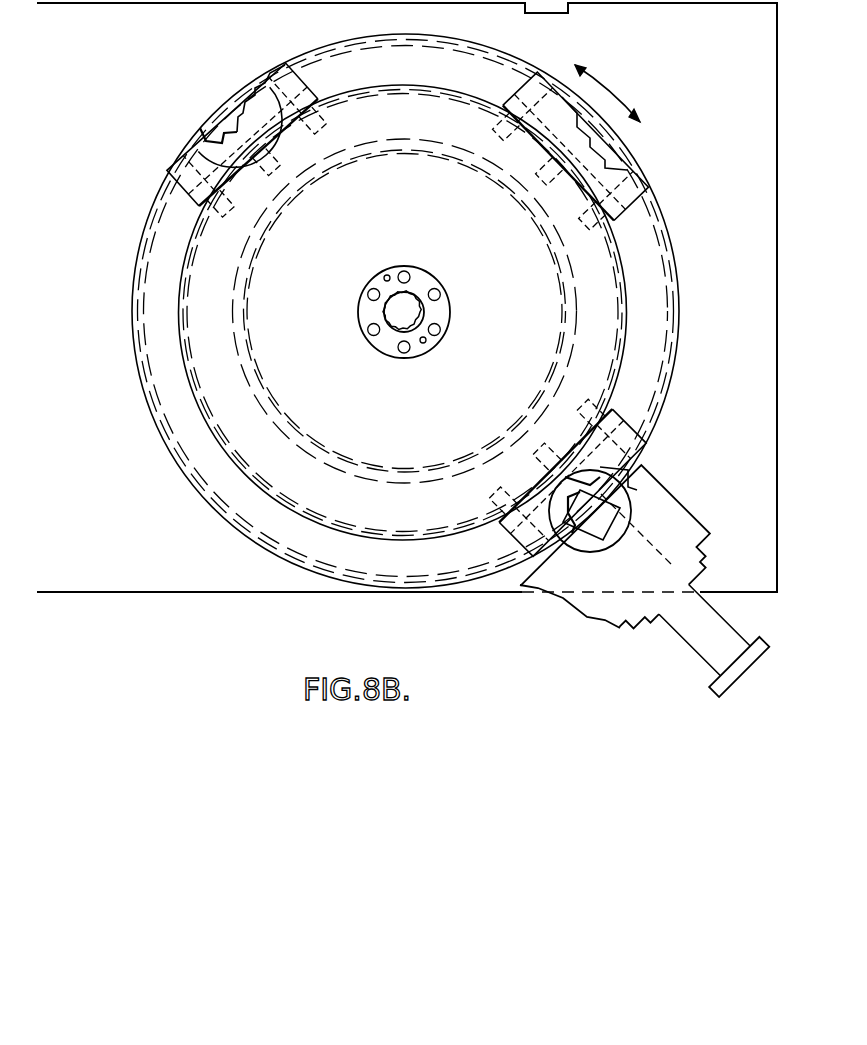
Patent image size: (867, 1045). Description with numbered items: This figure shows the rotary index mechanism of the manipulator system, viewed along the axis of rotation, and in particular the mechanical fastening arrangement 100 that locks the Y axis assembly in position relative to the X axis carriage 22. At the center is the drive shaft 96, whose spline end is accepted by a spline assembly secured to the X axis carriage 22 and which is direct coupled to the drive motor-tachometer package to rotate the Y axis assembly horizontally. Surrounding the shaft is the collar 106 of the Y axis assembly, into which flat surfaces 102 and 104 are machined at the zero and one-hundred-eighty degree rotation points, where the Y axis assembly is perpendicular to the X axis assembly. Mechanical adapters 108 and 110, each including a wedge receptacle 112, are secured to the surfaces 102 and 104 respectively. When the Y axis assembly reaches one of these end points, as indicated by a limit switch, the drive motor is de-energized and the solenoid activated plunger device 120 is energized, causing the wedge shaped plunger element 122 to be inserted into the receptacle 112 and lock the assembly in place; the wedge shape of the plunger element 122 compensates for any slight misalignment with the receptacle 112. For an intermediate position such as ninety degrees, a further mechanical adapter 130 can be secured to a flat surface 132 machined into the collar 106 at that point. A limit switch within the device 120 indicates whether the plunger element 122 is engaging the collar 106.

The X axis carriage 22 is at (117, 548).
The drive shaft 96 is at (412, 312).
The mechanical fastening arrangement 100 is at (512, 625).
The flat surface 102 is at (598, 412).
The flat surface 104 is at (305, 115).
The collar 106 is at (253, 482).
The mechanical adapter 108 is at (620, 443).
The mechanical adapter 110 is at (207, 163).
The wedge receptacle 112 is at (232, 135).
The solenoid activated plunger device 120 is at (622, 598).
The wedge shaped plunger element 122 is at (605, 512).
The mechanical adapter 130 is at (628, 168).
The flat surface 132 is at (612, 202).